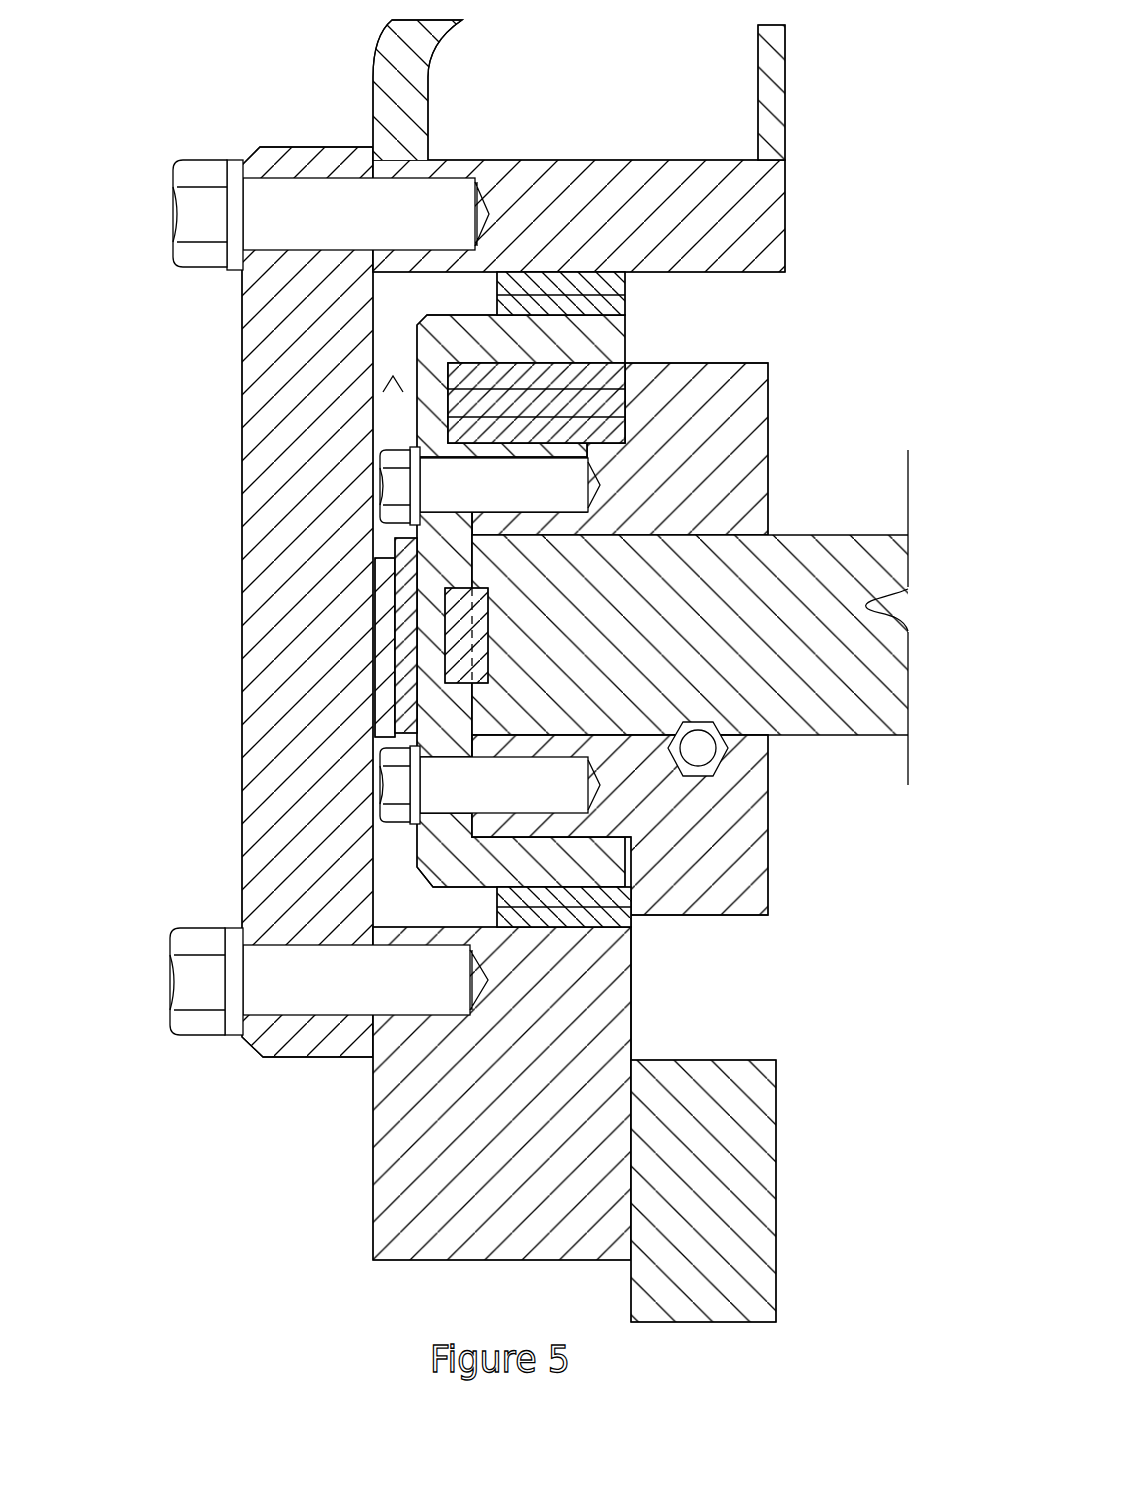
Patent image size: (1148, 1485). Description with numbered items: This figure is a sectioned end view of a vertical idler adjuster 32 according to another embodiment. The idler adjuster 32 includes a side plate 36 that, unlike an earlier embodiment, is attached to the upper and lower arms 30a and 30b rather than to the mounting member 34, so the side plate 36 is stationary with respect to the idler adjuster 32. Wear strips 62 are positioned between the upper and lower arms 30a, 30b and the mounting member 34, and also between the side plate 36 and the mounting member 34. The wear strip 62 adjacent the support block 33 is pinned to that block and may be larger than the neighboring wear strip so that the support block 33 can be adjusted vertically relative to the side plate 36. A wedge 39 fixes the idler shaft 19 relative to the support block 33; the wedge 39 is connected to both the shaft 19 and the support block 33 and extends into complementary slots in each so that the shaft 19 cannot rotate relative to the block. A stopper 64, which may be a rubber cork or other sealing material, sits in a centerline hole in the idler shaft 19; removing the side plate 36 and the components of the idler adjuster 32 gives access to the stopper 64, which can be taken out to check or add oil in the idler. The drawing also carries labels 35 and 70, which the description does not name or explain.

The idler shaft 19 is at (800, 700).
The upper arm 30a is at (755, 210).
The lower arm 30b is at (752, 1130).
The idler adjuster 32 is at (190, 902).
The support block 33 is at (703, 445).
The mounting member 34 is at (430, 327).
The clamp plate 35 is at (600, 405).
The side plate 36 is at (288, 372).
The wedge 39 is at (677, 775).
The wear strips 62 is at (627, 292).
The stopper 64 is at (485, 590).
The gap 70 is at (394, 380).